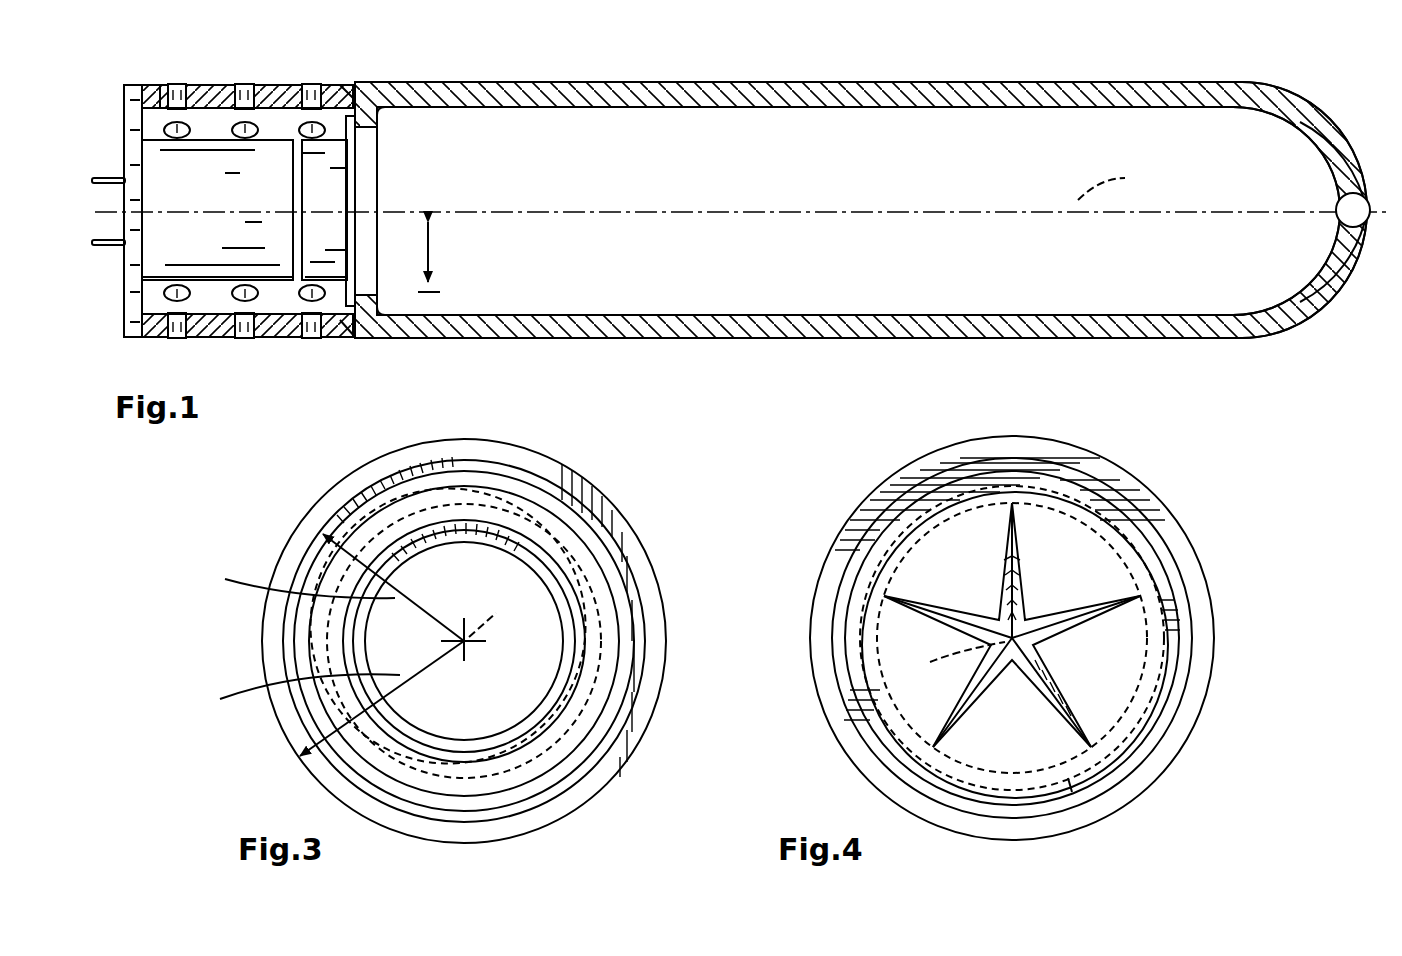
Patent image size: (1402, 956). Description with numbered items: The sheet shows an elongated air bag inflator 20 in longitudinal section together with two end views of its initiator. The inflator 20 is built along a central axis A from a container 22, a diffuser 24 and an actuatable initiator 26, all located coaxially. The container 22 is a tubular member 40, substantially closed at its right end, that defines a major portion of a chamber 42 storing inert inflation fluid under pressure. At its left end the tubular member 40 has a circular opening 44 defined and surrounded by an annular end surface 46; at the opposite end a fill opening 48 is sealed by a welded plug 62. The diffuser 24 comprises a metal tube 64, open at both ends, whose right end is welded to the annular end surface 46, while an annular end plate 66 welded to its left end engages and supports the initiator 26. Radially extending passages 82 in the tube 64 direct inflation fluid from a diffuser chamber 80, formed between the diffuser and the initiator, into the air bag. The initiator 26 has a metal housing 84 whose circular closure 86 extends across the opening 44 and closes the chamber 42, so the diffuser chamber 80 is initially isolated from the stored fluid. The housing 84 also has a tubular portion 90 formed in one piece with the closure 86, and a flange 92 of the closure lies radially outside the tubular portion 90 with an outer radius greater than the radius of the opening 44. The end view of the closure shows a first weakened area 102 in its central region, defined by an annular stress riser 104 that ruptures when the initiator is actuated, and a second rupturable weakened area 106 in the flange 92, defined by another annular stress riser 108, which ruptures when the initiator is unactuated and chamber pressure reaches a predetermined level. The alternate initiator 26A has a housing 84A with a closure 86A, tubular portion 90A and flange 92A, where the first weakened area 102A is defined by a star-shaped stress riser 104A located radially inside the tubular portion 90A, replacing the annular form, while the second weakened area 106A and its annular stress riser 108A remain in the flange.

In FIG. 1, the inflator 20 is at (497, 58).
In FIG. 1, the container 22 is at (657, 78).
In FIG. 1, the diffuser 24 is at (153, 78).
In FIG. 1, the initiator 26 is at (223, 213).
In FIG. 3, the initiator 26 is at (575, 426).
In FIG. 1, the tubular member 40 is at (777, 82).
In FIG. 1, the chamber 42 is at (770, 164).
In FIG. 1, the circular opening 44 is at (385, 138).
In FIG. 1, the annular end surface 46 is at (340, 333).
In FIG. 1, the fill opening 48 is at (1360, 197).
In FIG. 1, the plug 62 is at (1350, 212).
In FIG. 1, the metal tube 64 is at (282, 88).
In FIG. 1, the annular end plate 66 is at (133, 322).
In FIG. 1, the diffuser chamber 80 is at (287, 309).
In FIG. 1, the radially extending passages 82 is at (183, 102).
In FIG. 1, the initiator housing 84 is at (163, 172).
In FIG. 3, the initiator housing 84 is at (600, 478).
In FIG. 3, the circular closure 86 is at (548, 640).
In FIG. 3, the tubular portion 90 is at (560, 760).
In FIG. 3, the flange 92 is at (463, 440).
In FIG. 3, the first weakened area 102 is at (590, 680).
In FIG. 3, the annular stress riser 104 is at (590, 655).
In FIG. 3, the second rupturable weakened area 106 is at (610, 521).
In FIG. 3, the annular stress riser 108 is at (617, 557).
In FIG. 4, the initiator 26A is at (1158, 463).
In FIG. 4, the initiator housing 84A is at (1165, 496).
In FIG. 4, the closure 86A is at (1127, 627).
In FIG. 4, the tubular portion 90A is at (1093, 797).
In FIG. 4, the flange 92A is at (1065, 447).
In FIG. 4, the first weakened area 102A is at (1057, 668).
In FIG. 4, the star-shaped stress riser 104A is at (1060, 695).
In FIG. 4, the second weakened area 106A is at (1172, 545).
In FIG. 4, the annular stress riser 108A is at (1167, 558).